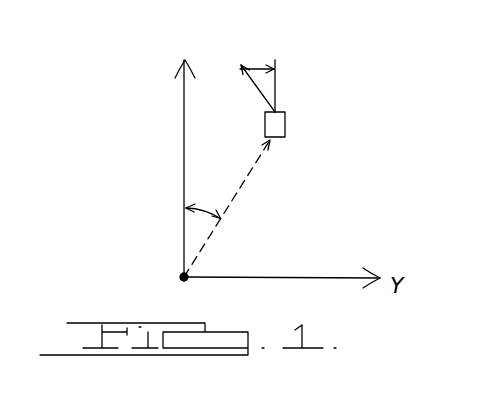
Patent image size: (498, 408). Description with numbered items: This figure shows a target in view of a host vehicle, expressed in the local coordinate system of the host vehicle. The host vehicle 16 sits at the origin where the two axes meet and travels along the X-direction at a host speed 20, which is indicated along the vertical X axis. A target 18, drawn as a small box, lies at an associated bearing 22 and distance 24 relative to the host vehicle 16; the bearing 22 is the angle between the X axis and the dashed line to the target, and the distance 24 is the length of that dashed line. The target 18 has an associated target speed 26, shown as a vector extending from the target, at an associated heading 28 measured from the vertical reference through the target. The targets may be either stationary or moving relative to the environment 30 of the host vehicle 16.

The host vehicle 16 is at (181, 273).
The target 18 is at (285, 128).
The host speed 20 is at (183, 182).
The bearing 22 is at (216, 212).
The distance 24 is at (218, 228).
The target speed 26 is at (257, 90).
The heading 28 is at (260, 68).
The environment 30 is at (326, 221).